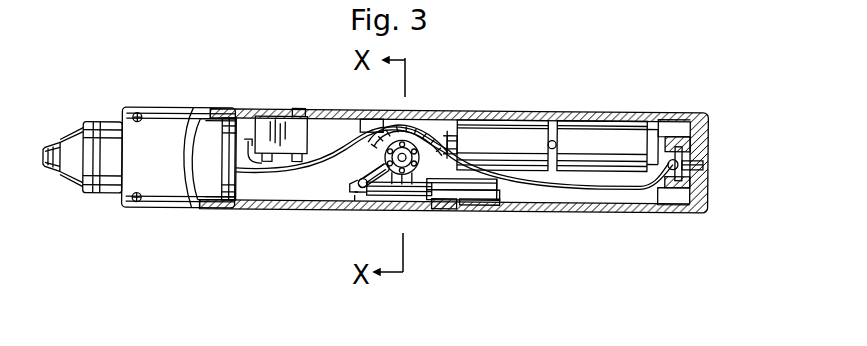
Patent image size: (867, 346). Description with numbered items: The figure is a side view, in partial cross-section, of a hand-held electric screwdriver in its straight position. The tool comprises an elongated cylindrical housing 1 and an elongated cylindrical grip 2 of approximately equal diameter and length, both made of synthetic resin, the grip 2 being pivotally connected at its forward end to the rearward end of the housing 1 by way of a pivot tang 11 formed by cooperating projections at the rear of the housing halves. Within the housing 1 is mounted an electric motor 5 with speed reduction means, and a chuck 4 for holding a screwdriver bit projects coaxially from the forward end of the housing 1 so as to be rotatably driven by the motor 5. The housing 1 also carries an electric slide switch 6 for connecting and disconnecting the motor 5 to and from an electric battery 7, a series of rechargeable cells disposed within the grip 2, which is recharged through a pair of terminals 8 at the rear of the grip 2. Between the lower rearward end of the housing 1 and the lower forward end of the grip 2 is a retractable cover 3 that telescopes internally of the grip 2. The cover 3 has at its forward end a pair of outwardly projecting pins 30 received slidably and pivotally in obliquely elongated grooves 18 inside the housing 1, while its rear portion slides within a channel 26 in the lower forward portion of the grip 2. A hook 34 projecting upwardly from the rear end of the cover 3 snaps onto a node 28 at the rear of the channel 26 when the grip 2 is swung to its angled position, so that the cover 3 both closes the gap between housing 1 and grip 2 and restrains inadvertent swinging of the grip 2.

The housing 1 is at (172, 125).
The grip 2 is at (662, 212).
The retractable cover 3 is at (408, 207).
The chuck 4 is at (103, 187).
The electric motor 5 is at (208, 135).
The electric slide switch 6 is at (280, 135).
The electric battery 7 is at (493, 137).
The terminals 8 is at (702, 160).
The pivot tang 11 is at (418, 112).
The grooves 18 is at (368, 202).
The channel 26 is at (463, 200).
The node 28 is at (493, 207).
The pins 30 is at (358, 187).
The hook 34 is at (447, 205).